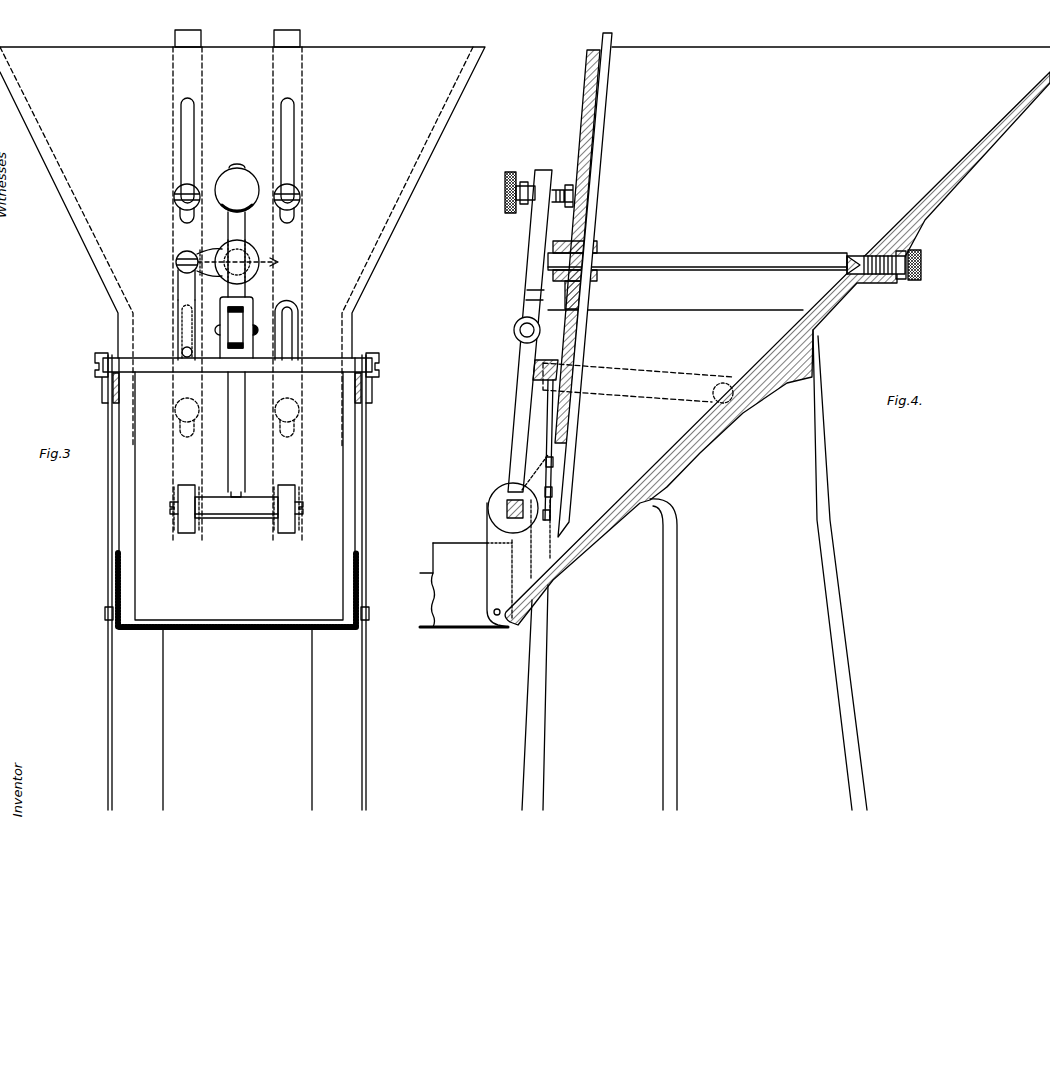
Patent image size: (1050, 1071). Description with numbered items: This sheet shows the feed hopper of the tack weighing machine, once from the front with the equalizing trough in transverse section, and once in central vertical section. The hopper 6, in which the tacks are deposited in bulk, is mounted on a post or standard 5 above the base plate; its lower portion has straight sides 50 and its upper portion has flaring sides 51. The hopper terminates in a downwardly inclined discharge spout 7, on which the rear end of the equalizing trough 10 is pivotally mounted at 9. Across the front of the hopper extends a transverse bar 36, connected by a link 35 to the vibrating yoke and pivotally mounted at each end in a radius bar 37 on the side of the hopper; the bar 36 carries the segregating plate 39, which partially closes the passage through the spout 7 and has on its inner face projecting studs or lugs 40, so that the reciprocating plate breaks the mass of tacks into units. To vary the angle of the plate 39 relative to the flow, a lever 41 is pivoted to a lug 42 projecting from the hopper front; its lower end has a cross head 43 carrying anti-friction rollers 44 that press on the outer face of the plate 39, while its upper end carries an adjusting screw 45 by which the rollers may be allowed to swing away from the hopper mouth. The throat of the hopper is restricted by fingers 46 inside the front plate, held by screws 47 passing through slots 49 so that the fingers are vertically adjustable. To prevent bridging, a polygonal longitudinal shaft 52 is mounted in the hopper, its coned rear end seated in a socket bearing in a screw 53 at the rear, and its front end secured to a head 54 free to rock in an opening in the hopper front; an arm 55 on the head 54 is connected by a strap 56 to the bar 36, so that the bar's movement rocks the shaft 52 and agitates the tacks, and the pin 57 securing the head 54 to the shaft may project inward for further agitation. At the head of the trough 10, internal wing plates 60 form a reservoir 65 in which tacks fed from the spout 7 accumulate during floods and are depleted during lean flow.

In FIG. 3, the post or standard 5 is at (237, 582).
In FIG. 4, the post or standard 5 is at (694, 570).
In FIG. 4, the hopper 6 is at (959, 177).
In FIG. 3, the discharge spout 7 is at (248, 620).
In FIG. 4, the discharge spout 7 is at (532, 581).
In FIG. 3, the pivot 9 is at (105, 605).
In FIG. 4, the pivot 9 is at (497, 609).
In FIG. 3, the equalizing trough 10 is at (232, 631).
In FIG. 3, the link 35 is at (112, 641).
In FIG. 4, the link 35 is at (546, 668).
In FIG. 3, the transverse bar 36 is at (148, 368).
In FIG. 4, the transverse bar 36 is at (535, 370).
In FIG. 3, the radius bar 37 is at (107, 362).
In FIG. 4, the radius bar 37 is at (664, 373).
In FIG. 4, the segregating plate 39 is at (550, 416).
In FIG. 4, the projecting studs or lugs 40 is at (553, 462).
In FIG. 3, the lever 41 is at (246, 232).
In FIG. 4, the lever 41 is at (535, 248).
In FIG. 3, the lug 42 is at (231, 320).
In FIG. 4, the lug 42 is at (557, 330).
In FIG. 3, the cross head 43 is at (236, 507).
In FIG. 4, the cross head 43 is at (506, 507).
In FIG. 3, the anti-friction rollers 44 is at (181, 487).
In FIG. 4, the anti-friction rollers 44 is at (500, 494).
In FIG. 3, the adjusting screw 45 is at (237, 188).
In FIG. 4, the adjusting screw 45 is at (511, 172).
In FIG. 3, the fingers 46 is at (176, 37).
In FIG. 4, the fingers 46 is at (579, 427).
In FIG. 3, the screws 47 is at (175, 200).
In FIG. 3, the slots 49 is at (183, 146).
In FIG. 3, the straight sides 50 is at (119, 344).
In FIG. 4, the straight sides 50 is at (720, 370).
In FIG. 3, the flaring sides 51 is at (70, 193).
In FIG. 4, the flaring sides 51 is at (831, 108).
In FIG. 4, the longitudinal shaft 52 is at (740, 254).
In FIG. 4, the screw 53 is at (863, 256).
In FIG. 3, the head 54 is at (251, 278).
In FIG. 4, the head 54 is at (597, 280).
In FIG. 3, the arm 55 is at (210, 250).
In FIG. 3, the strap 56 is at (180, 293).
In FIG. 4, the strap 56 is at (549, 292).
In FIG. 3, the pin 57 is at (211, 283).
In FIG. 4, the pin 57 is at (592, 261).
In FIG. 3, the internal wing plate 60 is at (115, 553).
In FIG. 4, the internal wing plate 60 is at (445, 543).
In FIG. 4, the reservoir 65 is at (464, 600).